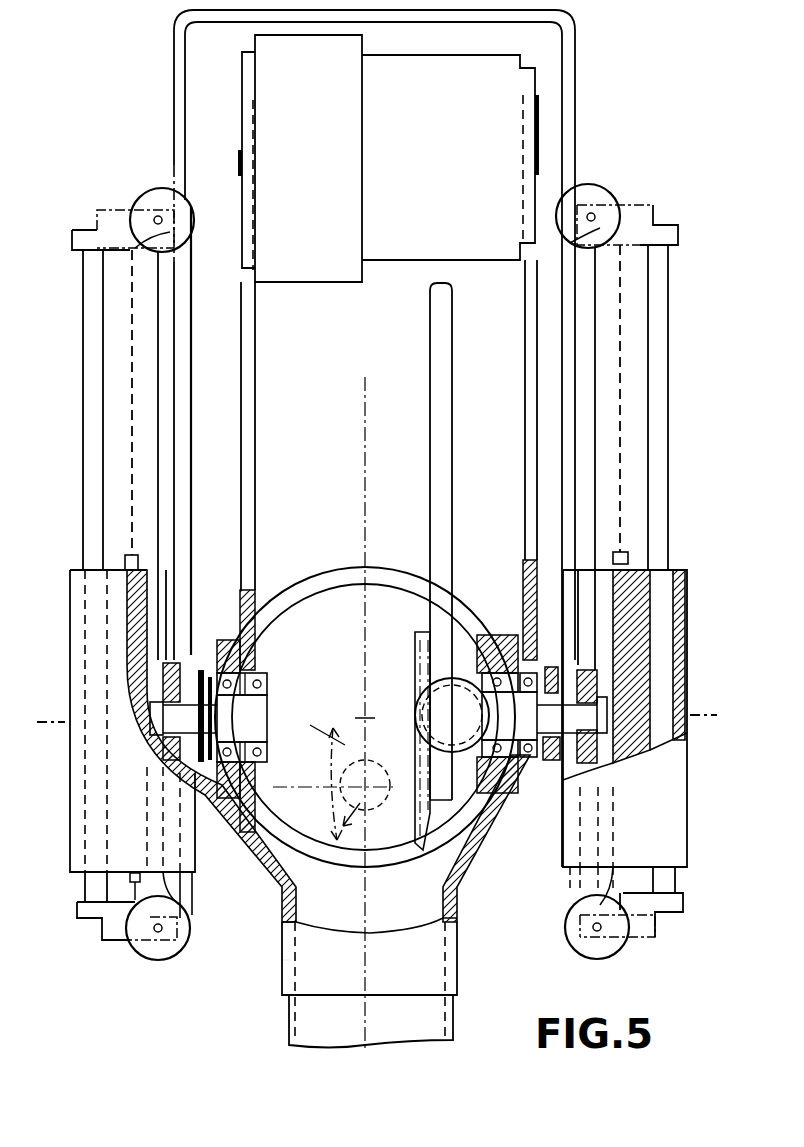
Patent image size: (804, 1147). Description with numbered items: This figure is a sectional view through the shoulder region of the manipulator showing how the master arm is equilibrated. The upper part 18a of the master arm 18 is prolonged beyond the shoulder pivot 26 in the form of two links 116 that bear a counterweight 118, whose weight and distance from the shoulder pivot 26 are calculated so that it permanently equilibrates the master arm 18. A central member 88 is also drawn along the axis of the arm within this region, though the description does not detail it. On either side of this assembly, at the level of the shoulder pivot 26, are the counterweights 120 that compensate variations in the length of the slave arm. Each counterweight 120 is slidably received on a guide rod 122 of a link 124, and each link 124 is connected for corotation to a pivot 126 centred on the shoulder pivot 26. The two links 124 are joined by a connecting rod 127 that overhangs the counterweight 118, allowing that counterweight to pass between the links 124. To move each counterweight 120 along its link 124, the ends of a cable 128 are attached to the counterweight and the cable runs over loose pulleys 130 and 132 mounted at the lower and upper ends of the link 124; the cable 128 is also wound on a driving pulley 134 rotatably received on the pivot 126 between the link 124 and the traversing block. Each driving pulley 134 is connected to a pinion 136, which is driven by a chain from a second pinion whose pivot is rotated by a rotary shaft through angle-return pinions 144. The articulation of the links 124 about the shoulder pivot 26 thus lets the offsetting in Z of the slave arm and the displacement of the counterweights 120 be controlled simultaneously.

The connecting rod 127 is at (177, 62).
The loose pulley 132 is at (152, 200).
The cable 128 is at (130, 320).
The link 124 is at (167, 360).
The guide rod 122 is at (90, 437).
The counterweight 118 is at (333, 180).
The link 116 is at (247, 480).
The drive shaft 88 is at (440, 543).
The counterweight 120 is at (183, 838).
The pivot 126 is at (257, 703).
The driving pulley 134 is at (188, 690).
The shoulder pivot 26 is at (50, 720).
The pinion 136 is at (240, 840).
The loose pulley 130 is at (152, 946).
The upper part of the master arm 18a is at (290, 977).
The master arm 18 is at (254, 1018).
The angle-return pinions 144 is at (357, 808).